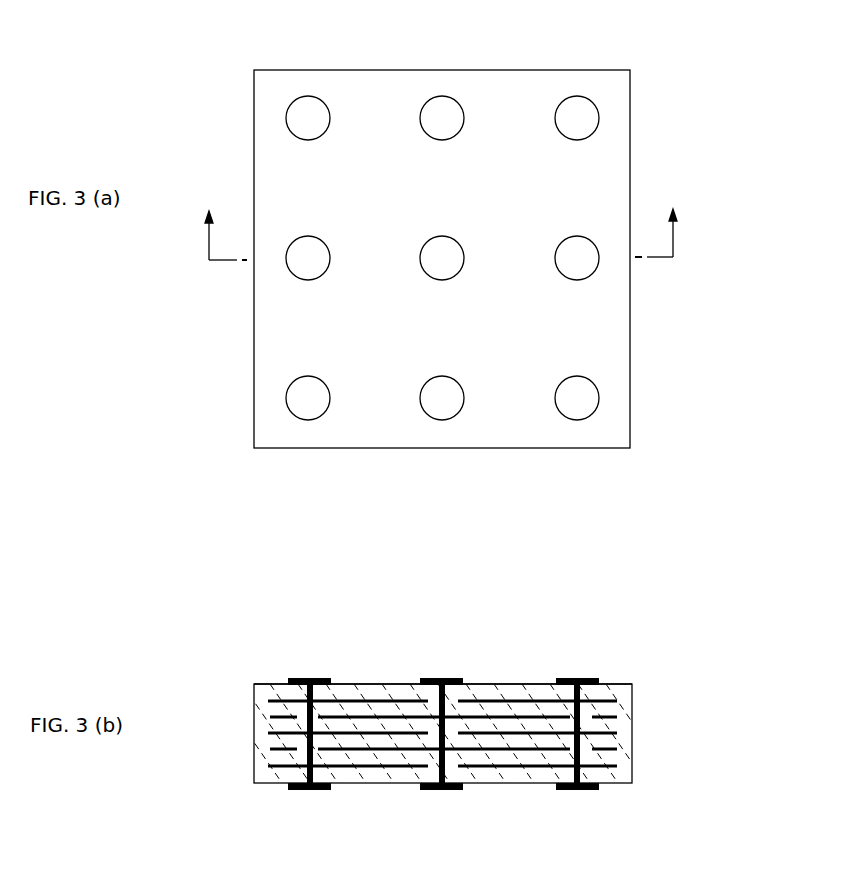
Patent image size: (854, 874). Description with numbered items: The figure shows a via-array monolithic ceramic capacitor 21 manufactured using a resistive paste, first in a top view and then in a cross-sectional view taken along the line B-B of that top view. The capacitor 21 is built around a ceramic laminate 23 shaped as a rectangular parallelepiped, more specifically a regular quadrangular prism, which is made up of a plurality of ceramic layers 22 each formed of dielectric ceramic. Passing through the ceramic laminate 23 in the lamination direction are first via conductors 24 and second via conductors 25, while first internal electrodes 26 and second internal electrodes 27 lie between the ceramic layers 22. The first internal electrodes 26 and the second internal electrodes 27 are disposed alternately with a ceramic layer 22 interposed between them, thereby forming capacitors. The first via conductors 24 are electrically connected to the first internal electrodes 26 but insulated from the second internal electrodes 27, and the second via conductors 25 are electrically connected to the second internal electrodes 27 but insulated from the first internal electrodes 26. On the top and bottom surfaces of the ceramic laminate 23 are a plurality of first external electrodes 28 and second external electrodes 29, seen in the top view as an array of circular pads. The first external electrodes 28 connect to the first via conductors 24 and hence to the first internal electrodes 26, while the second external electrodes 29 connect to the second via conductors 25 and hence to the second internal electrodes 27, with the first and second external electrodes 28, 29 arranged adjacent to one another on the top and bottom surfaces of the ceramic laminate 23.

In FIG. 3A, the via-array monolithic ceramic capacitor 21 is at (205, 34).
In FIG. 3B, the via-array monolithic ceramic capacitor 21 is at (198, 600).
In FIG. 3B, the ceramic layers 22 is at (612, 707).
In FIG. 3A, the ceramic laminate 23 is at (642, 82).
In FIG. 3B, the ceramic laminate 23 is at (645, 684).
In FIG. 3B, the first via conductors 24 is at (458, 689).
In FIG. 3B, the second via conductors 25 is at (314, 699).
In FIG. 3B, the first internal electrodes 26 is at (378, 718).
In FIG. 3B, the second internal electrodes 27 is at (550, 700).
In FIG. 3A, the first external electrodes 28 is at (312, 103).
In FIG. 3B, the first external electrodes 28 is at (441, 680).
In FIG. 3A, the second external electrodes 29 is at (437, 103).
In FIG. 3B, the second external electrodes 29 is at (306, 680).